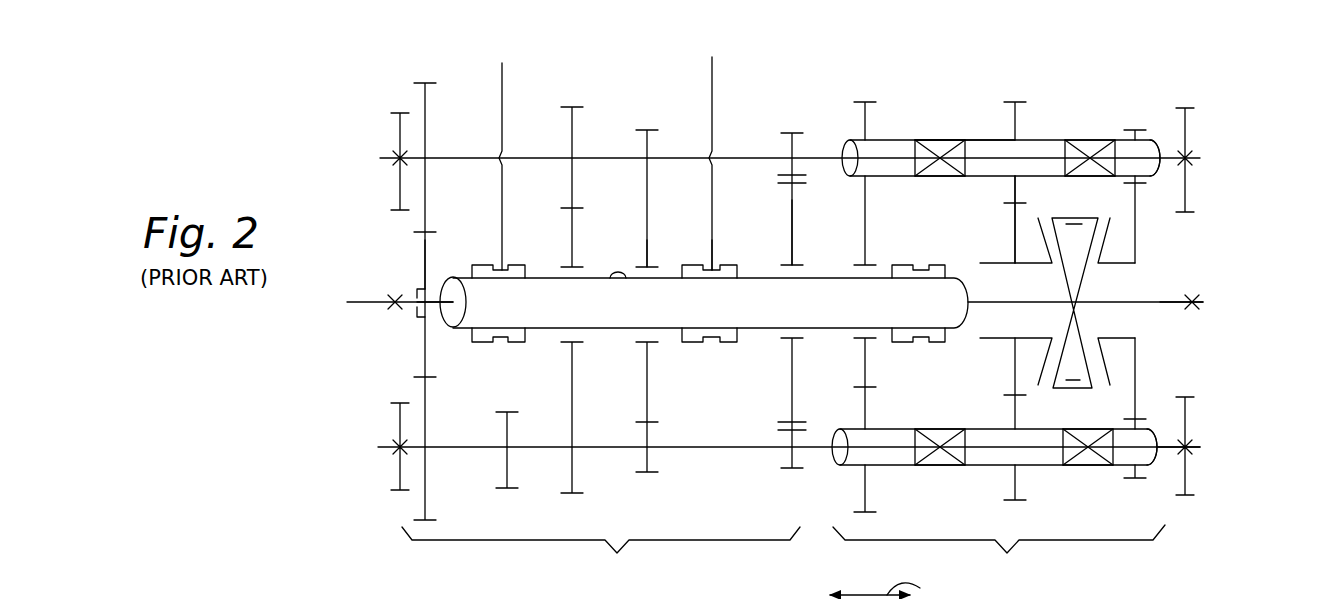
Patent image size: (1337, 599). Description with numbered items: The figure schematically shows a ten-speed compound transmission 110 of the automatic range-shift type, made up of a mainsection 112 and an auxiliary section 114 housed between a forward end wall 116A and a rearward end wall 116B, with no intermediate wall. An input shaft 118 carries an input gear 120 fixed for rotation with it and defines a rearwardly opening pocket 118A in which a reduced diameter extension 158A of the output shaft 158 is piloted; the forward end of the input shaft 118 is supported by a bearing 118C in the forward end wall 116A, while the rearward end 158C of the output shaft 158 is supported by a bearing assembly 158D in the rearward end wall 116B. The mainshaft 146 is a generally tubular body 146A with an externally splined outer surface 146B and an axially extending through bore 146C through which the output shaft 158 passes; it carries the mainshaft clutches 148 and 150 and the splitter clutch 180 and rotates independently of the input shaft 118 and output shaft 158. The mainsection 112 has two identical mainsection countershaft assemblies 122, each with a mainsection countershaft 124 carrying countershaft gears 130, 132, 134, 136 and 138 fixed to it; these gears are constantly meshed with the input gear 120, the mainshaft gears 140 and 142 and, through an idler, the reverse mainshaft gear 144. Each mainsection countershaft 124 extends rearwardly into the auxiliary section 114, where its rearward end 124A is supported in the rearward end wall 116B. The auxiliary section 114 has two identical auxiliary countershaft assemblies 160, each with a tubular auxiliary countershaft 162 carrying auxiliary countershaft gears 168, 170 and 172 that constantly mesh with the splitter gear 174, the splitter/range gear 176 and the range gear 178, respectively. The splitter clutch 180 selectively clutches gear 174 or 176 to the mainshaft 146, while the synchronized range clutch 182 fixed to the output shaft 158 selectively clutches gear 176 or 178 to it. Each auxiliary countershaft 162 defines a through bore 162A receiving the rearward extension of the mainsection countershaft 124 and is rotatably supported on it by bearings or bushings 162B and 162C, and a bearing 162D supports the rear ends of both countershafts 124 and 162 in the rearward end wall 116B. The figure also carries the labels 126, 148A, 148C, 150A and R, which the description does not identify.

The transmission 110 is at (973, 83).
The mainsection 112 is at (601, 557).
The auxiliary section 114 is at (999, 556).
The forward end wall 116A is at (400, 193).
The rearward end wall 116B is at (1188, 130).
The input shaft 118 is at (363, 305).
The rearwardly opening pocket 118A is at (427, 312).
The bearing 118C is at (397, 310).
The input gear 120 is at (423, 263).
The mainsection countershaft assembly 122 is at (685, 137).
The mainsection countershaft 124 is at (602, 449).
The rearward end of mainsection countershaft 124A is at (1168, 452).
The bearing 126 is at (396, 450).
The countershaft gear 130 is at (425, 120).
The countershaft gear 132 is at (507, 435).
The countershaft gear 134 is at (572, 145).
The countershaft gear 136 is at (647, 147).
The countershaft gear 138 is at (792, 147).
The mainshaft gear 140 is at (572, 228).
The mainshaft gear 142 is at (648, 258).
The reverse mainshaft gear 144 is at (793, 258).
The mainshaft 146 is at (593, 273).
The generally tubular body 146A is at (552, 318).
The externally splined outer surface 146B is at (626, 277).
The axially extending through bore 146C is at (462, 330).
The mainshaft clutch 148 is at (500, 267).
The gear support 148A is at (502, 83).
The gear 148C is at (753, 280).
The mainshaft clutch 150 is at (713, 258).
The gear support 150A is at (712, 83).
The output shaft 158 is at (1162, 302).
The reduced diameter extension 158A is at (430, 295).
The rearward end of output shaft 158C is at (1197, 308).
The bearing assembly 158D is at (1195, 295).
The auxiliary countershaft assembly 160 is at (1057, 122).
The auxiliary countershaft 162 is at (983, 137).
The through bore 162A is at (977, 430).
The bearing or bushing 162B is at (940, 143).
The bearing or bushing 162C is at (1092, 140).
The bearing 162D is at (1190, 440).
The auxiliary countershaft gear 168 is at (865, 130).
The auxiliary countershaft gear 170 is at (1015, 123).
The auxiliary countershaft gear 172 is at (1150, 140).
The splitter gear 174 is at (867, 258).
The splitter/range gear 176 is at (1015, 246).
The range gear 178 is at (1135, 187).
The splitter clutch 180 is at (915, 265).
The synchronized range clutch 182 is at (1072, 345).
The rotation direction R is at (885, 586).